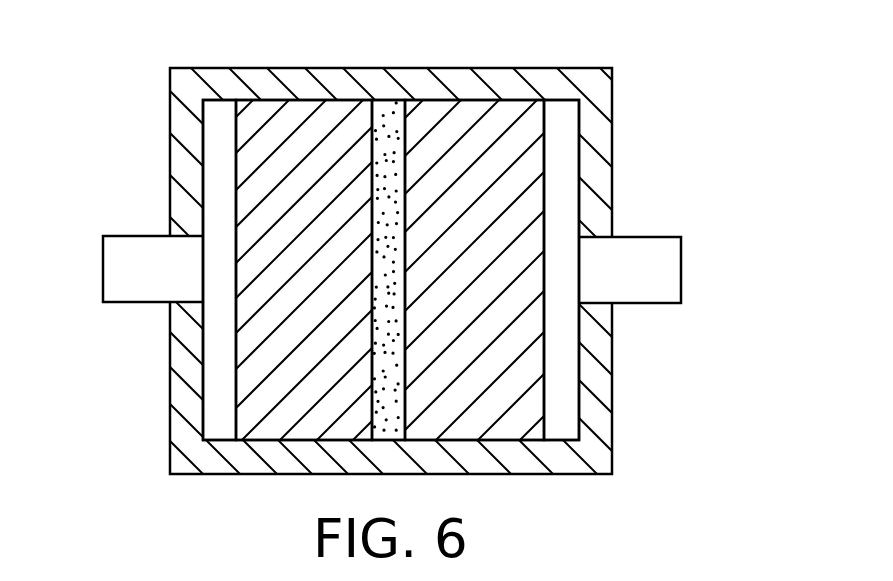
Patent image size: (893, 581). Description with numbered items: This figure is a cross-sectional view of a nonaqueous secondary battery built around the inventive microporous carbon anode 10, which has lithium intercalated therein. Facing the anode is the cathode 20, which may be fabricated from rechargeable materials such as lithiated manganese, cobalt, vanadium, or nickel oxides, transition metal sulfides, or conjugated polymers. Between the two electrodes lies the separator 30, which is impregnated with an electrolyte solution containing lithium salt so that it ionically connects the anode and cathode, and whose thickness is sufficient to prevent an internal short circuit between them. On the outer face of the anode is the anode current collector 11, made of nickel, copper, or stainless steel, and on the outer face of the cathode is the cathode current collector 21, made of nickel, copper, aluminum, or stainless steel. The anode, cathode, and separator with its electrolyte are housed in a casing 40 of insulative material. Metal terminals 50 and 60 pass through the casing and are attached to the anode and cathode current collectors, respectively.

The microporous carbon anode 10 is at (300, 120).
The anode current collector 11 is at (220, 182).
The cathode 20 is at (472, 120).
The cathode current collector 21 is at (565, 180).
The separator 30 is at (388, 117).
The casing 40 is at (597, 398).
The terminal 50 is at (118, 277).
The terminal 60 is at (662, 270).